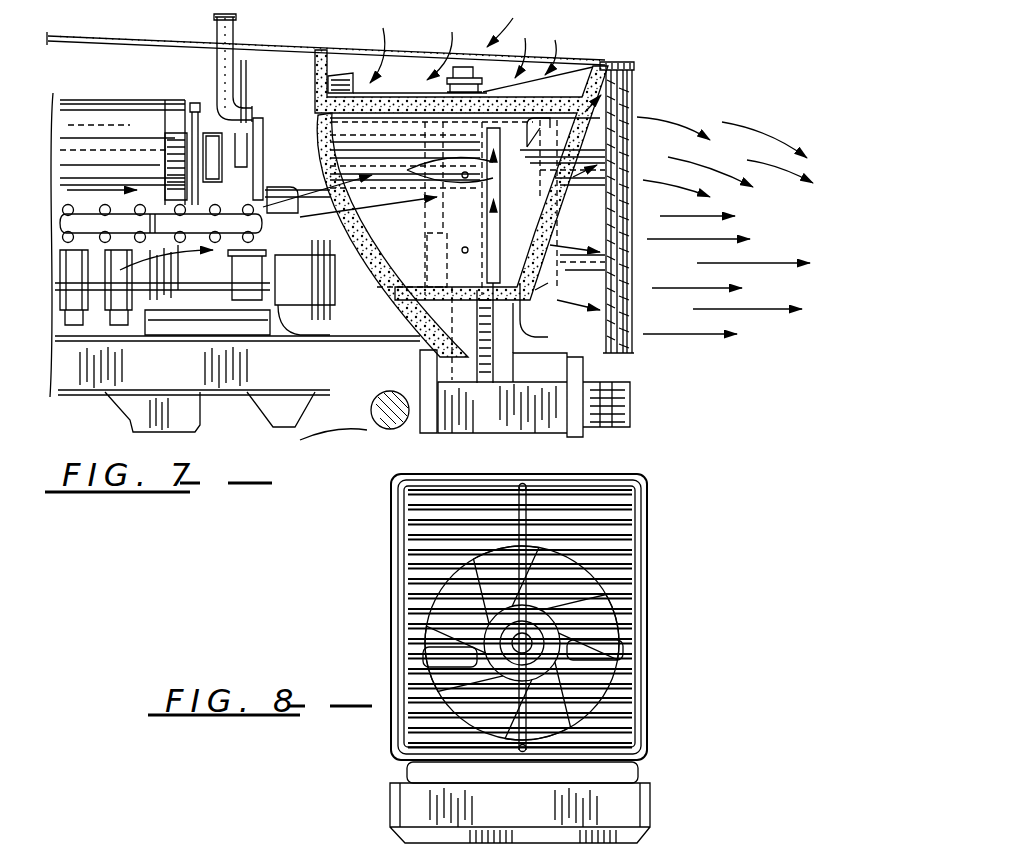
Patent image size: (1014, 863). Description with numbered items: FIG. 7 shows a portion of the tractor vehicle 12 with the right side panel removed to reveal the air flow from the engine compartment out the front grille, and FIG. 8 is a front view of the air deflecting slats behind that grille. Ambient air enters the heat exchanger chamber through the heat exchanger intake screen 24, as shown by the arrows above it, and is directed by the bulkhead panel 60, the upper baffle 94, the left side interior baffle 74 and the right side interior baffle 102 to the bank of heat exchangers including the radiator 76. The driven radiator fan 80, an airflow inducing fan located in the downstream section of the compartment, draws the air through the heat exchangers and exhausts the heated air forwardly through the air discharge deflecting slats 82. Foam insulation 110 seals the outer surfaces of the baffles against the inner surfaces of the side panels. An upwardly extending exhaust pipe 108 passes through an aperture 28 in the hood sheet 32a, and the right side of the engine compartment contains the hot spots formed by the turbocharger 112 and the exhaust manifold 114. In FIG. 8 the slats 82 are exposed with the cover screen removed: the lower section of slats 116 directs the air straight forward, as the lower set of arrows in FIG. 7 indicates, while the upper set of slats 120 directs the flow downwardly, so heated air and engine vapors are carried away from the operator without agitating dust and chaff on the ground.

In FIG. 7, the vehicle 12 is at (372, 1).
In FIG. 7, the heat exchanger intake screen 24 is at (334, 161).
In FIG. 7, the aperture 28 is at (215, 43).
In FIG. 7, the hood sheet 32a is at (108, 23).
In FIG. 7, the bulkhead panel 60 is at (313, 147).
In FIG. 7, the left side interior baffle 74 is at (462, 175).
In FIG. 7, the radiator 76 is at (417, 150).
In FIG. 7, the driven radiator fan 80 is at (534, 395).
In FIG. 7, the air discharge deflecting slats 82 is at (632, 167).
In FIG. 8, the air discharge deflecting slats 82 is at (537, 507).
In FIG. 7, the upper baffle 94 is at (552, 70).
In FIG. 7, the right side interior baffle 102 is at (437, 197).
In FIG. 7, the exhaust pipe 108 is at (240, 36).
In FIG. 7, the foam insulation 110 is at (627, 90).
In FIG. 7, the turbocharger 112 is at (168, 152).
In FIG. 7, the exhaust manifold 114 is at (118, 232).
In FIG. 8, the lower section of slats 116 is at (653, 613).
In FIG. 8, the upper set of slats 120 is at (653, 485).